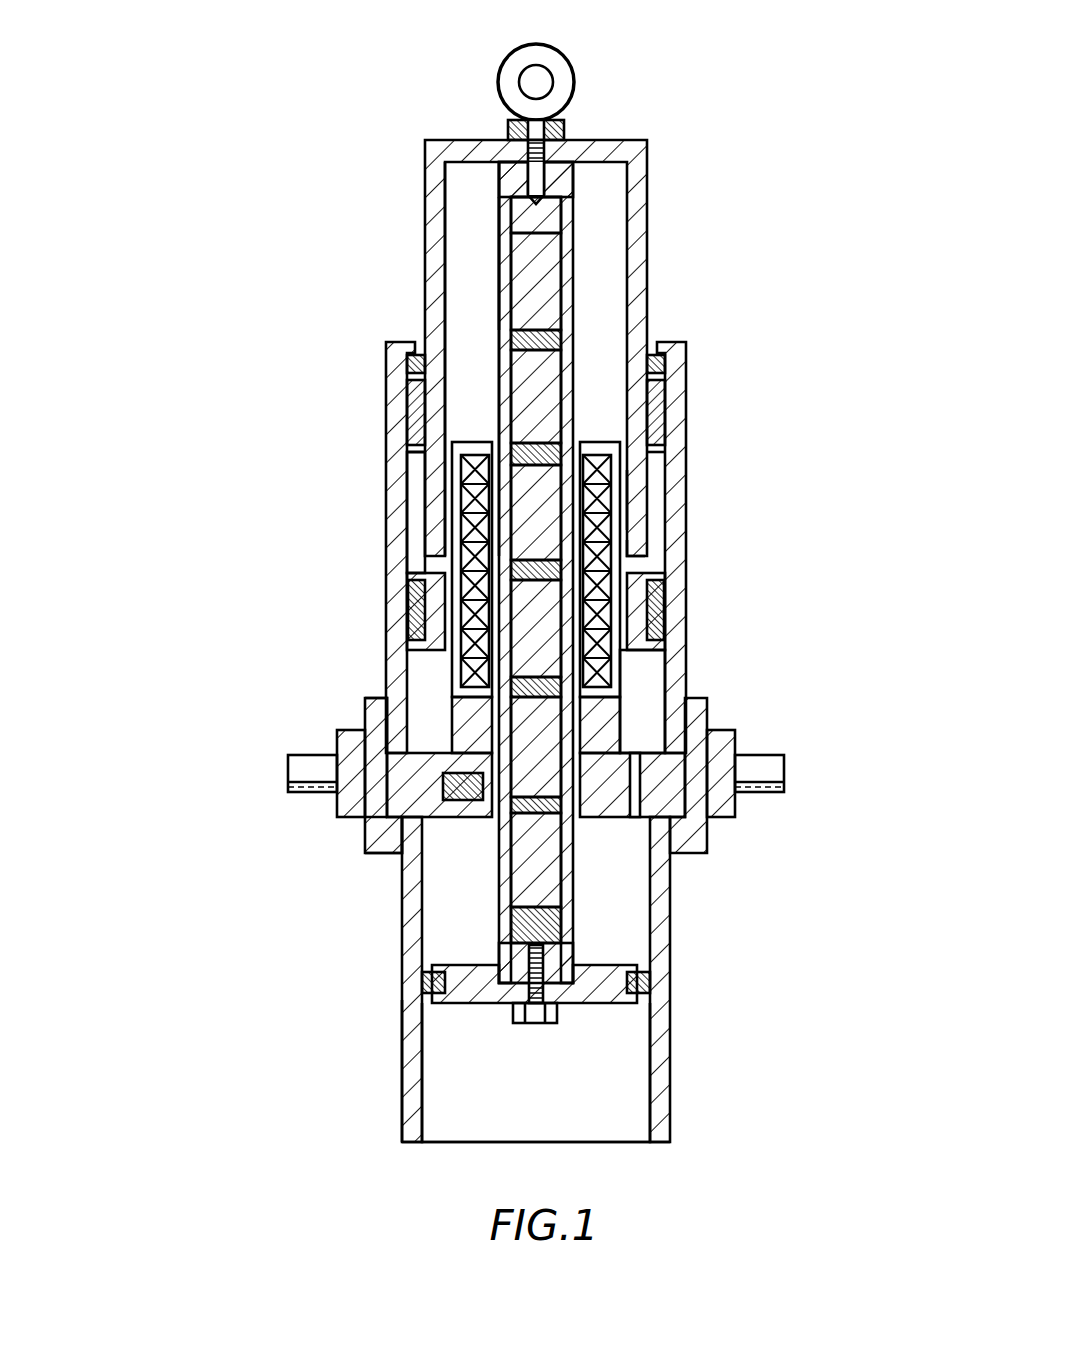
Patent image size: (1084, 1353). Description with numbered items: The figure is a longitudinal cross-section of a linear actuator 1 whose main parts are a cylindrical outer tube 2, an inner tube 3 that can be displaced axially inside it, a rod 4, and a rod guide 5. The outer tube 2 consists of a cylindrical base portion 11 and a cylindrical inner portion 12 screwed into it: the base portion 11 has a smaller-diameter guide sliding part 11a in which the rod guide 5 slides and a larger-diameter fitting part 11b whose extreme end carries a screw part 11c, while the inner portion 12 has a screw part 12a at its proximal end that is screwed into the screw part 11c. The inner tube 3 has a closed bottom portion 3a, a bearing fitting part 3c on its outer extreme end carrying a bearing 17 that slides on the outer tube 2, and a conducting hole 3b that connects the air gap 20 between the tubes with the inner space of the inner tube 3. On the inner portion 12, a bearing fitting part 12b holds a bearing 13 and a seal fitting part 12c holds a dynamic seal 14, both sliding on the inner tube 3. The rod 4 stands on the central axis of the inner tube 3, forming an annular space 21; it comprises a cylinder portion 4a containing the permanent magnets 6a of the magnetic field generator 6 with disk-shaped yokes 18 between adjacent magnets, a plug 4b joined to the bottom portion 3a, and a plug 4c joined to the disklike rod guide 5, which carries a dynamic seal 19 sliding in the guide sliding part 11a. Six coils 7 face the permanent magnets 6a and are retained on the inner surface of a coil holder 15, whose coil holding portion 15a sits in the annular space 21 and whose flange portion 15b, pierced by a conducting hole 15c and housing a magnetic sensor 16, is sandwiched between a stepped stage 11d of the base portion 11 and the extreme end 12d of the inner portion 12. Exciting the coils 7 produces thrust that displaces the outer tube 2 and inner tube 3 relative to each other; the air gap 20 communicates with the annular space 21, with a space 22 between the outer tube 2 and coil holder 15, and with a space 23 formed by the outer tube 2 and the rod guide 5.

The linear actuator 1 is at (408, 180).
The outer tube 2 is at (400, 963).
The inner tube 3 is at (650, 212).
The bottom portion 3a is at (576, 140).
The conducting hole 3b is at (635, 515).
The bearing fitting part 3c is at (640, 556).
The rod 4 is at (496, 283).
The cylinder portion 4a is at (498, 250).
The plug 4b is at (560, 178).
The plug 4c is at (432, 985).
The rod guide 5 is at (478, 1000).
The magnetic field generator 6 is at (575, 365).
The permanent magnet 6a is at (558, 345).
The coil 7 is at (605, 555).
The base portion 11 is at (400, 893).
The guide sliding part 11a is at (408, 1045).
The fitting part 11b is at (390, 800).
The screw part 11c is at (383, 718).
The stepped stage 11d is at (400, 835).
The inner portion 12 is at (384, 495).
The screw part 12a is at (372, 752).
The bearing fitting part 12b is at (405, 410).
The seal fitting part 12c is at (405, 357).
The extreme end 12d is at (345, 790).
The bearing 13 is at (666, 410).
The dynamic seal 14 is at (666, 362).
The coil holder 15 is at (624, 710).
The coil holding portion 15a is at (412, 604).
The flange portion 15b is at (700, 740).
The conducting hole 15c is at (690, 812).
The magnetic sensor 16 is at (460, 793).
The bearing 17 is at (655, 600).
The yoke 18 is at (511, 452).
The dynamic seal 19 is at (640, 988).
The air gap 20 is at (415, 470).
The annular space 21 is at (612, 185).
The space 22 is at (652, 665).
The space 23 is at (615, 935).